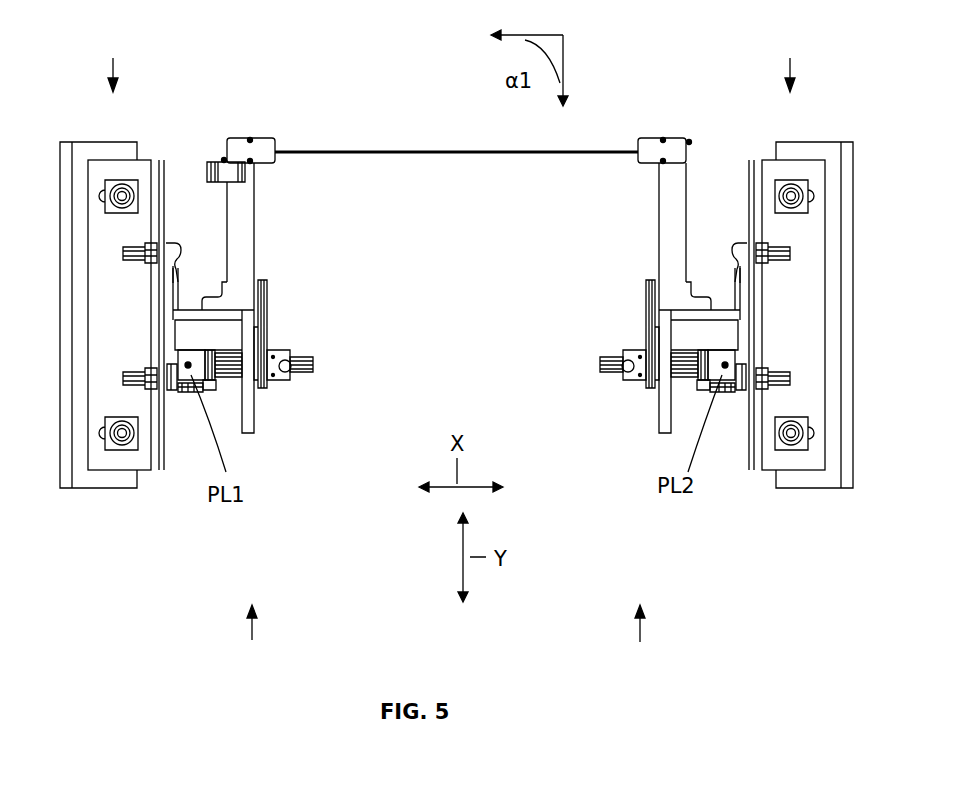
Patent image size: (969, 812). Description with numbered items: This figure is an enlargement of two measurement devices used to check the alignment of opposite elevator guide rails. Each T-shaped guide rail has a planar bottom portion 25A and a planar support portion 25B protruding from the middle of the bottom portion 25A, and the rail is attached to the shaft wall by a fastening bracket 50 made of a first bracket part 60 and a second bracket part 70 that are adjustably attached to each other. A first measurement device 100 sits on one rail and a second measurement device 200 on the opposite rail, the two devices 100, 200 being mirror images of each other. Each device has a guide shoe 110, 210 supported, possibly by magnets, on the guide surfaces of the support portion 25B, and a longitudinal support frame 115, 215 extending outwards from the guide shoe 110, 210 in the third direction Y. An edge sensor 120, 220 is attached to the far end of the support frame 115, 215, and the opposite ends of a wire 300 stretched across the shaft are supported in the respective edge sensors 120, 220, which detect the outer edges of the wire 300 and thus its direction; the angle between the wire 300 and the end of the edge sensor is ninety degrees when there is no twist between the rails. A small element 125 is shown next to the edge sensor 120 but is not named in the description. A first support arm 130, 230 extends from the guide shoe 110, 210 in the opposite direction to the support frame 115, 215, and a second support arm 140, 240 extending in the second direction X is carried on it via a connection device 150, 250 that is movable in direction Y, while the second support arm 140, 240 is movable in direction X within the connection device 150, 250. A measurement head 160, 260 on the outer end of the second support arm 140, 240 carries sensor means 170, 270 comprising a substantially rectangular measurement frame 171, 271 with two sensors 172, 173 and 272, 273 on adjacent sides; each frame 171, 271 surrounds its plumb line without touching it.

The fastening bracket 50 is at (450, 62).
The first bracket part 60 is at (147, 160).
The second bracket part 70 is at (80, 142).
The bottom portion 25A is at (173, 294).
The support portion 25B is at (185, 309).
The first measurement device 100 is at (255, 641).
The guide shoe 110 is at (240, 290).
The support frame 115 is at (248, 210).
The edge sensor 120 is at (263, 137).
The first coupling sleeve 125 is at (222, 162).
The first support arm 130 is at (268, 302).
The second support arm 140 is at (314, 365).
The connection device 150 is at (285, 350).
The measurement head 160 is at (238, 384).
The sensor means 170 is at (190, 350).
The measurement frame 171 is at (209, 384).
The sensor 172 is at (190, 393).
The sensor 173 is at (212, 344).
The second measurement device 200 is at (642, 639).
The guide shoe 210 is at (674, 290).
The support frame 215 is at (665, 212).
The edge sensor 220 is at (645, 137).
The first support arm 230 is at (645, 297).
The second support arm 240 is at (600, 367).
The connection device 250 is at (640, 350).
The measurement head 260 is at (680, 385).
The sensor means 270 is at (725, 352).
The measurement frame 271 is at (704, 384).
The sensor 272 is at (724, 393).
The sensor 273 is at (708, 352).
The wire 300 is at (410, 150).